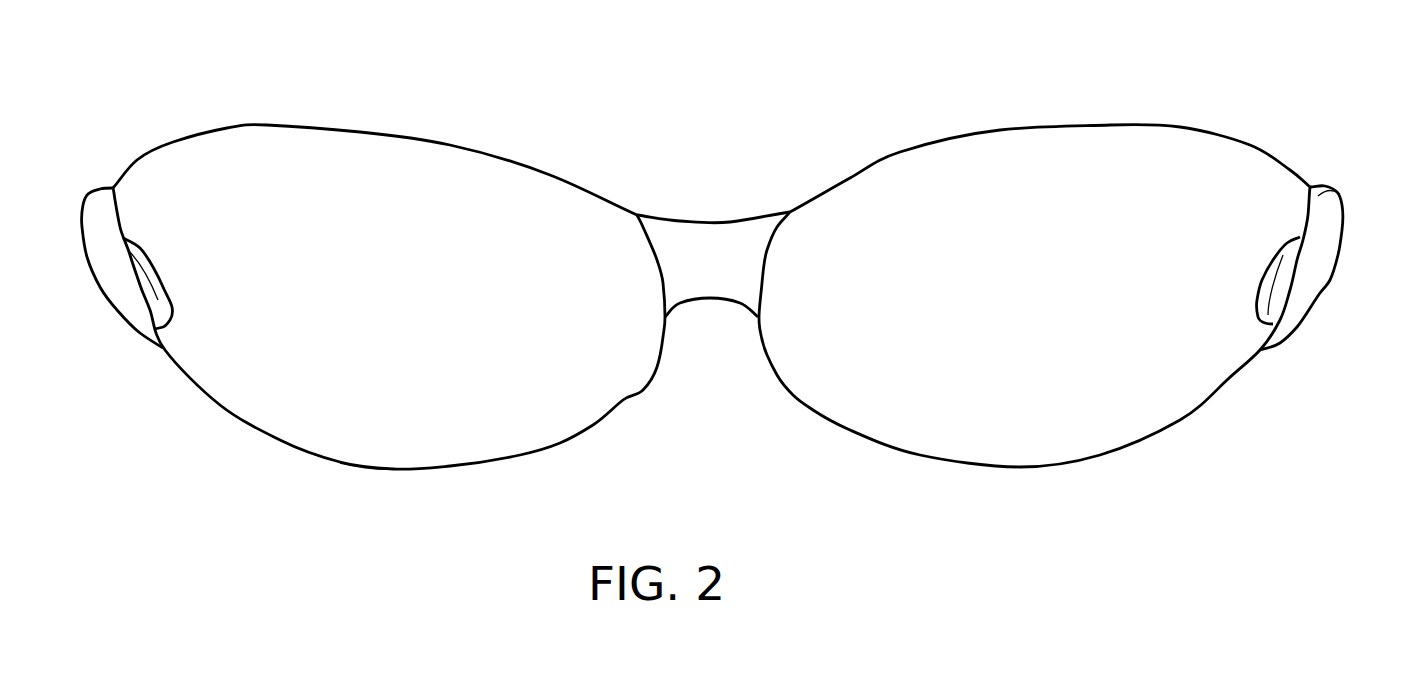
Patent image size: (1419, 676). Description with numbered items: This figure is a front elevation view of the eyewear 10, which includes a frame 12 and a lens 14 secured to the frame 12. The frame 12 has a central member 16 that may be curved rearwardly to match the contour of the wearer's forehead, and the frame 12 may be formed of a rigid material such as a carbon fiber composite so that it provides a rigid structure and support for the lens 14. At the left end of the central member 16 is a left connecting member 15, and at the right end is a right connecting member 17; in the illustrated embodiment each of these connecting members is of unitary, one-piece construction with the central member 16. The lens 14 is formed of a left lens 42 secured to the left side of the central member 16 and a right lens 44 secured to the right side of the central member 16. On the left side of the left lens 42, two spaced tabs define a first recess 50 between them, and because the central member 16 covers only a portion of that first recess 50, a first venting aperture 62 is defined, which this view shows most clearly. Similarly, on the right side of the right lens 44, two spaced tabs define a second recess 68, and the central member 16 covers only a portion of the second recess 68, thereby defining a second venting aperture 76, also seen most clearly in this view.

The eyewear 10 is at (1056, 106).
The frame 12 is at (730, 228).
The lens 14 is at (338, 482).
The left connecting member 15 is at (1327, 198).
The central member 16 is at (704, 285).
The right connecting member 17 is at (103, 212).
The left lens 42 is at (1037, 298).
The right lens 44 is at (370, 283).
The first recess 50 is at (1273, 265).
The first venting aperture 62 is at (1267, 312).
The second recess 68 is at (153, 270).
The second venting aperture 76 is at (158, 292).